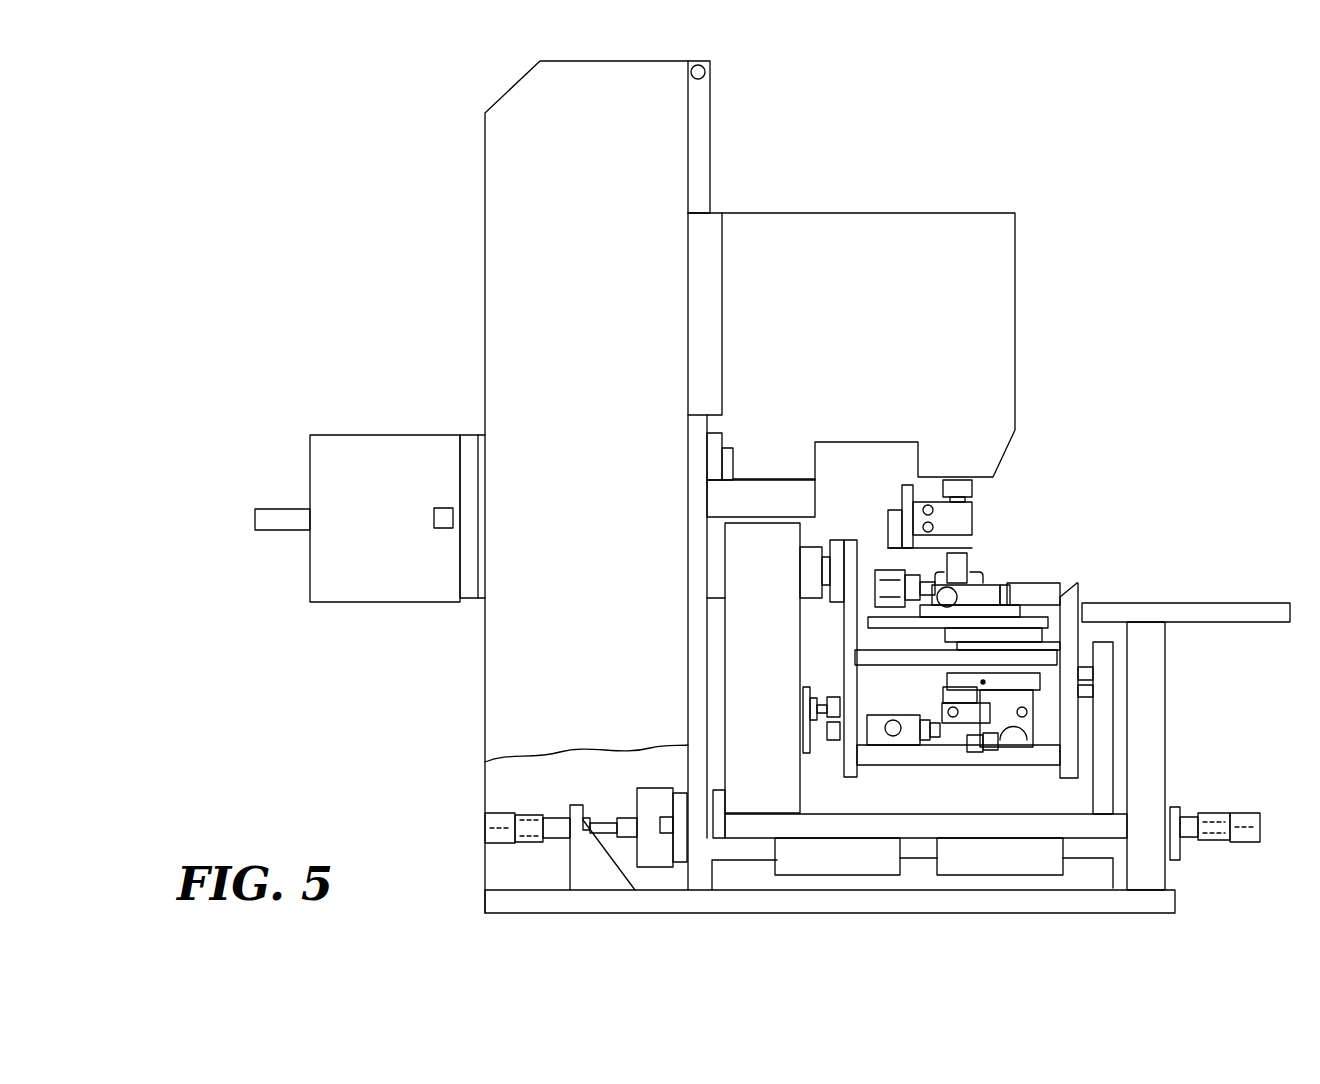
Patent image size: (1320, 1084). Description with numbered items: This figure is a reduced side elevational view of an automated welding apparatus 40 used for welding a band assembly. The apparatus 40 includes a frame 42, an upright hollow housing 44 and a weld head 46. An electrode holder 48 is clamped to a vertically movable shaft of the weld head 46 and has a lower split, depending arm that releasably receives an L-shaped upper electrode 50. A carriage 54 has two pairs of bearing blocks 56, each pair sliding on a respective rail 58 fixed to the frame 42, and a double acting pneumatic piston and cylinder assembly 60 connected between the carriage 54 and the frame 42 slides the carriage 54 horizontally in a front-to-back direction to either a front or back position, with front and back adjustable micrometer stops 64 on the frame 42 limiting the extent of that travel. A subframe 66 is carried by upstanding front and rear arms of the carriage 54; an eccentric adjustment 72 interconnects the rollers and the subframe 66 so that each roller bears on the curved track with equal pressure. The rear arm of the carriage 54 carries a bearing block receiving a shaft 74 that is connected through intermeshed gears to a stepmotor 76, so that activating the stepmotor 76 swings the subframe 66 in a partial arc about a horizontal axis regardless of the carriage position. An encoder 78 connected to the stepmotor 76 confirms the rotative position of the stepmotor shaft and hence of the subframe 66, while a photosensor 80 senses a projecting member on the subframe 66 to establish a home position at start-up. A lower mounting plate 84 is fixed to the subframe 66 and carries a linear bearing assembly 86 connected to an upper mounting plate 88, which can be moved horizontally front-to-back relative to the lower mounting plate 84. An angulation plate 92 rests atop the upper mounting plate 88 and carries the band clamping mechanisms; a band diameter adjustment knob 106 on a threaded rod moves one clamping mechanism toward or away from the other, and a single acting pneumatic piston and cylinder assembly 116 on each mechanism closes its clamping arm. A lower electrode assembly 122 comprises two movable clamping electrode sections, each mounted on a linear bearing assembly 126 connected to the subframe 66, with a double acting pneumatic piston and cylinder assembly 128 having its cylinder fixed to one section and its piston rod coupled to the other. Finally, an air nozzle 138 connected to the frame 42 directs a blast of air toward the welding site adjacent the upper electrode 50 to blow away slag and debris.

The automated welding apparatus 40 is at (1062, 318).
The frame 42 is at (1168, 900).
The upright hollow housing 44 is at (485, 705).
The weld head 46 is at (865, 222).
The electrode holder 48 is at (972, 515).
The upper electrode 50 is at (980, 573).
The carriage 54 is at (750, 824).
The bearing blocks 56 is at (785, 863).
The rail 58 is at (925, 878).
The double acting pneumatic piston and cylinder assembly 60 is at (645, 797).
The adjustable micrometer stops 64 is at (495, 828).
The subframe 66 is at (843, 760).
The eccentric adjustment 72 is at (1100, 683).
The shaft 74 is at (813, 548).
The stepmotor 76 is at (485, 435).
The encoder 78 is at (338, 447).
The photosensor 80 is at (810, 692).
The lower mounting plate 84 is at (862, 656).
The linear bearing assembly 86 is at (903, 633).
The upper mounting plate 88 is at (1067, 600).
The angulation plate 92 is at (1042, 612).
The band diameter adjustment knob 106 is at (942, 604).
The single acting pneumatic piston and cylinder assembly 116 is at (883, 570).
The lower electrode assembly 122 is at (1005, 672).
The linear bearing assembly 126 is at (963, 750).
The double acting pneumatic piston and cylinder assembly 128 is at (1017, 740).
The air nozzle 138 is at (1083, 609).